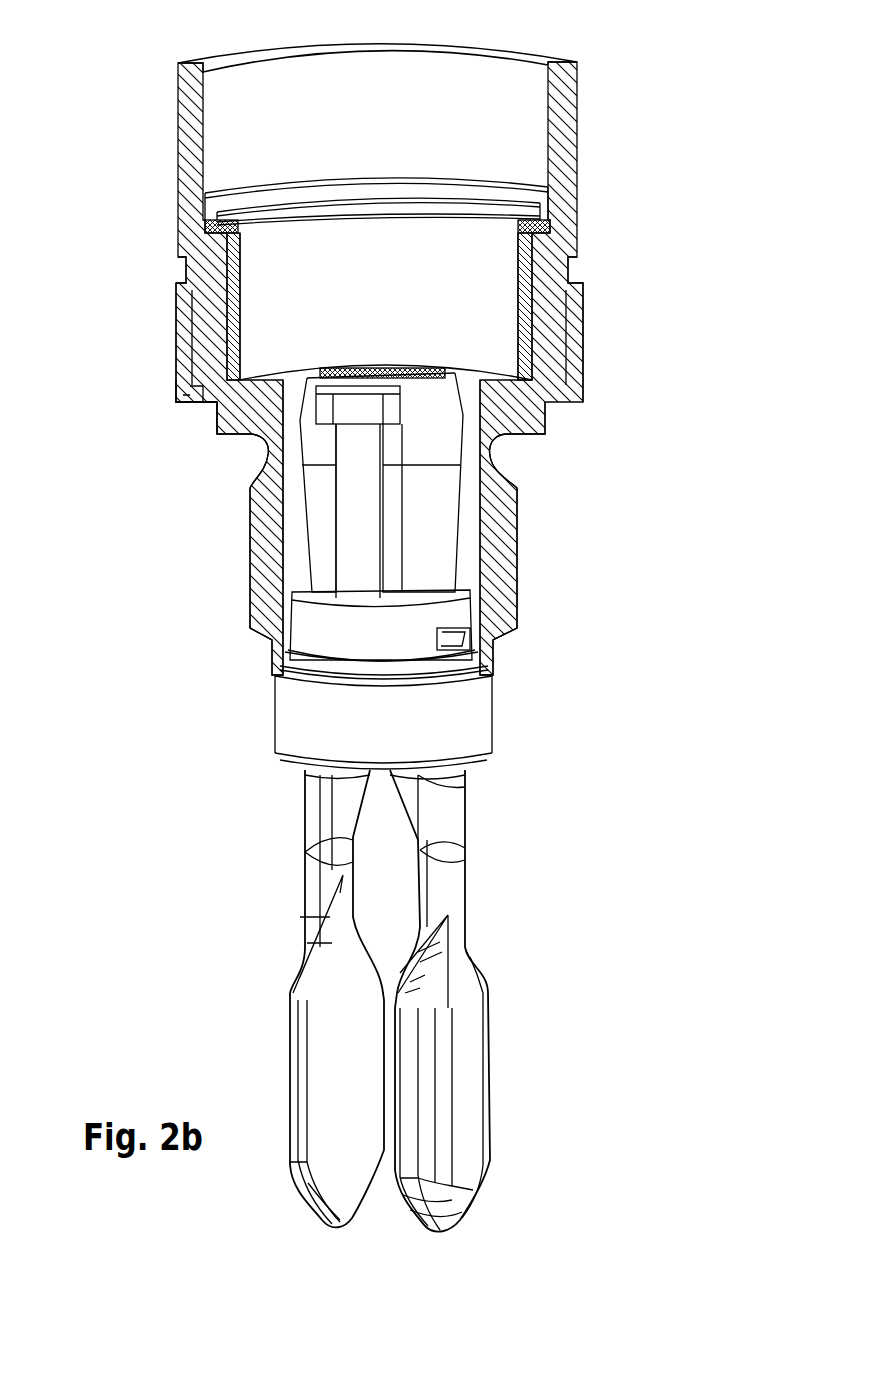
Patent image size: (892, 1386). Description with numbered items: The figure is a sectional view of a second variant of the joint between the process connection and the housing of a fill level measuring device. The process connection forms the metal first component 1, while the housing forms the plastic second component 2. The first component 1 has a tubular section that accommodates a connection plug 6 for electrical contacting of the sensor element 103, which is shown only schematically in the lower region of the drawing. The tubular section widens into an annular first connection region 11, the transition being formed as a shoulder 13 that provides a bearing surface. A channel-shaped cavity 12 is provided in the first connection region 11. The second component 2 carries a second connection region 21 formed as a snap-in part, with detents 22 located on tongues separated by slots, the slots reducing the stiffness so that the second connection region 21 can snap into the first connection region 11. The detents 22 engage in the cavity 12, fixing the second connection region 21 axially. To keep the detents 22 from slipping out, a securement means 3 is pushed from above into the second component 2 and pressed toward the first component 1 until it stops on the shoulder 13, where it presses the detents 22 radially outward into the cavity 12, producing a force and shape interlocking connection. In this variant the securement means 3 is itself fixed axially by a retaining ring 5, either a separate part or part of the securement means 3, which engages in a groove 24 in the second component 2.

The first component 1 is at (268, 567).
The second component 2 is at (365, 359).
The securement means 3 is at (282, 358).
The retaining ring 5 is at (258, 216).
The connection plug 6 is at (450, 518).
The first connection region 11 is at (592, 303).
The cavity 12 is at (187, 372).
The shoulder 13 is at (207, 388).
The second connection region 21 is at (540, 278).
The detents 22 is at (192, 352).
The groove 24 is at (203, 228).
The sensor element 103 is at (272, 1012).